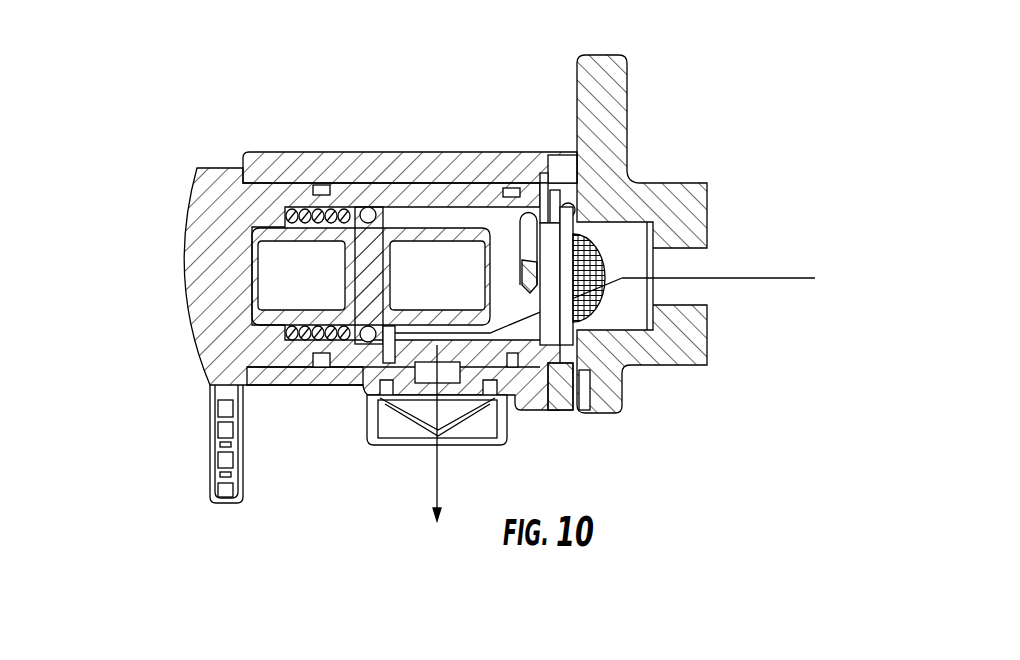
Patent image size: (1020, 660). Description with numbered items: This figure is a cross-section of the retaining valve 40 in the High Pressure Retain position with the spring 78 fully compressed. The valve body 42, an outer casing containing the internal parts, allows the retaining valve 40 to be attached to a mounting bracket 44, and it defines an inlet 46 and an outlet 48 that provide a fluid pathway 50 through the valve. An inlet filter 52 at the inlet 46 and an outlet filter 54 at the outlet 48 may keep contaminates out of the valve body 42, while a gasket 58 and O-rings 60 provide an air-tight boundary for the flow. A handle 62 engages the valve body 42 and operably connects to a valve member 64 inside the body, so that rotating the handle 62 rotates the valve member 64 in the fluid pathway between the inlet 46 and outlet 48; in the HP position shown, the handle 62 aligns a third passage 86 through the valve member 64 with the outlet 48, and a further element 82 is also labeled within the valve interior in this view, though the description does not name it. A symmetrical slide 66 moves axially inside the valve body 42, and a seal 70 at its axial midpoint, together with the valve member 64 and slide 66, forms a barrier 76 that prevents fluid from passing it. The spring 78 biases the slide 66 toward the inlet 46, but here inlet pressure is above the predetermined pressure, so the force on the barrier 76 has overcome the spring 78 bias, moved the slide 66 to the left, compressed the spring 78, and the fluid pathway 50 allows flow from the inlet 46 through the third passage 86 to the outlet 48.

The retaining valve 40 is at (152, 142).
The valve body 42 is at (272, 386).
The mounting bracket 44 is at (627, 58).
The inlet 46 is at (558, 411).
The outlet 48 is at (430, 402).
The fluid pathway 50 is at (762, 278).
The inlet filter 52 is at (598, 252).
The outlet filter 54 is at (450, 408).
The gasket 58 is at (590, 386).
The O-rings 60 is at (320, 185).
The handle 62 is at (207, 468).
The valve member 64 is at (305, 369).
The slide 66 is at (438, 228).
The seal 70 is at (368, 206).
The barrier 76 is at (413, 206).
The spring 78 is at (292, 210).
The pellet 82 is at (527, 284).
The third passage 86 is at (364, 387).